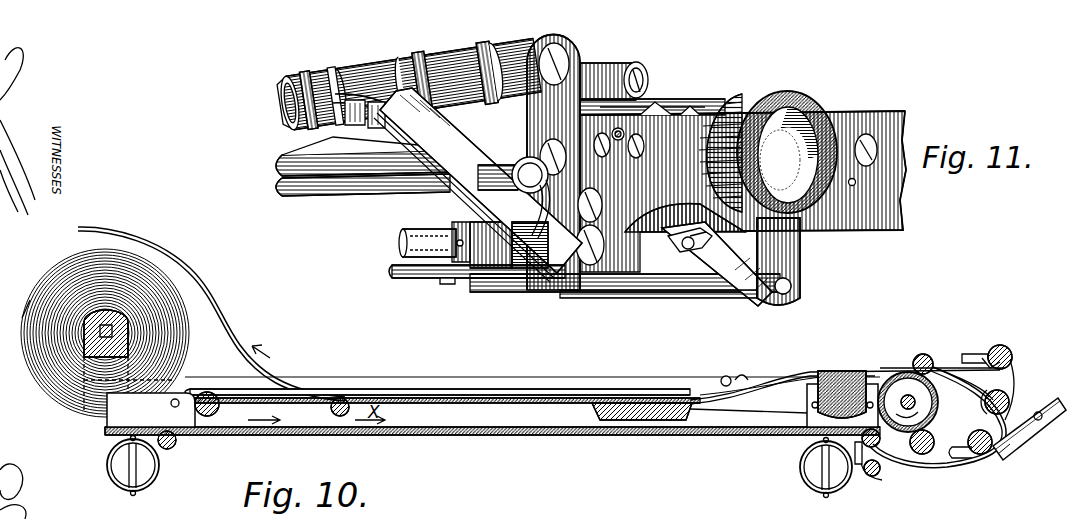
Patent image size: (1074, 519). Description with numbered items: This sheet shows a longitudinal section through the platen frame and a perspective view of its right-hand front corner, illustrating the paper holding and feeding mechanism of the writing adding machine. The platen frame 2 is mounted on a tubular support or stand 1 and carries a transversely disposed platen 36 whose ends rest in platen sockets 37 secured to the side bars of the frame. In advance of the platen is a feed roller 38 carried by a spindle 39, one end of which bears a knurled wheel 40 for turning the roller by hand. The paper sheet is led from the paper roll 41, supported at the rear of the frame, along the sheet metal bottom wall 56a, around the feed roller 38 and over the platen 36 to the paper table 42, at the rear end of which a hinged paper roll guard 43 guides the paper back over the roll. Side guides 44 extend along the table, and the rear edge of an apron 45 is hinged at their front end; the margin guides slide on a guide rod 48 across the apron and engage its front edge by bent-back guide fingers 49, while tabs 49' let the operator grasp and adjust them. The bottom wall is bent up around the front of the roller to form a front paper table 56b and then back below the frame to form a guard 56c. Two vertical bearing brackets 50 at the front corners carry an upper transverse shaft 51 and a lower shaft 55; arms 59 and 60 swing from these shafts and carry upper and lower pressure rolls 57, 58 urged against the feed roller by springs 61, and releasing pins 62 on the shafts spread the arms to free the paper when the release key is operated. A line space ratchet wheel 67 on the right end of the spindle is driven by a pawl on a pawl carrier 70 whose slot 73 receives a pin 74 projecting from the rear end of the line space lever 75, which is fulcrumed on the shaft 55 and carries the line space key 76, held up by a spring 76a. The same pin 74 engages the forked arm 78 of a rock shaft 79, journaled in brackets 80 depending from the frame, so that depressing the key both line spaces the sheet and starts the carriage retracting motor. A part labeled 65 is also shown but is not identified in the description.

In FIG. 10, the support or stand 1 is at (158, 468).
In FIG. 11, the platen frame 2 is at (862, 126).
In FIG. 10, the platen frame 2 is at (475, 437).
In FIG. 10, the platen 36 is at (840, 386).
In FIG. 10, the platen sockets or rests 37 is at (810, 424).
In FIG. 10, the feed roller 38 is at (938, 401).
In FIG. 10, the spindle 39 is at (932, 410).
In FIG. 11, the knurled wheel 40 is at (800, 95).
In FIG. 10, the paper roll 41 is at (62, 396).
In FIG. 10, the paper table 42 is at (540, 406).
In FIG. 10, the hinged paper roll guard 43 is at (340, 398).
In FIG. 10, the side guides 44 is at (552, 390).
In FIG. 10, the apron 45 is at (771, 380).
In FIG. 10, the guide rod 48 is at (724, 377).
In FIG. 10, the guide fingers 49 is at (765, 366).
In FIG. 10, the tabs 49' is at (748, 360).
In FIG. 11, the vertical bearing brackets 50 is at (566, 47).
In FIG. 10, the vertical bearing brackets 50 is at (1012, 372).
In FIG. 11, the transverse shaft 51 is at (505, 46).
In FIG. 10, the transverse shaft 51 is at (1012, 356).
In FIG. 11, the shaft 55 is at (402, 246).
In FIG. 10, the shaft 55 is at (1004, 456).
In FIG. 10, the bottom wall of the platen frame 56a is at (658, 423).
In FIG. 11, the front paper table 56b is at (300, 160).
In FIG. 10, the front paper table 56b is at (965, 376).
In FIG. 10, the guard 56c is at (958, 470).
In FIG. 11, the upper pressure roll 57 is at (633, 64).
In FIG. 10, the upper pressure roll 57 is at (920, 353).
In FIG. 11, the lower pressure roll 58 is at (602, 292).
In FIG. 10, the lower pressure roll 58 is at (919, 455).
In FIG. 11, the arm 59 is at (607, 64).
In FIG. 10, the arm 59 is at (938, 368).
In FIG. 11, the arm 60 is at (530, 272).
In FIG. 10, the arm 60 is at (942, 450).
In FIG. 11, the springs 61 is at (440, 55).
In FIG. 10, the springs 61 is at (988, 360).
In FIG. 10, the releasing pins 62 is at (976, 353).
In FIG. 11, the bar 65 is at (290, 198).
In FIG. 11, the line space ratchet wheel 67 is at (668, 102).
In FIG. 11, the pawl carrier 70 is at (685, 205).
In FIG. 11, the slot 73 is at (701, 251).
In FIG. 11, the pin 74 is at (680, 262).
In FIG. 11, the line space lever 75 is at (408, 182).
In FIG. 10, the line space lever 75 is at (1029, 429).
In FIG. 11, the line space key 76 is at (372, 86).
In FIG. 11, the spring 76a is at (500, 165).
In FIG. 10, the spring 76a is at (1012, 402).
In FIG. 11, the arm 78 is at (724, 300).
In FIG. 10, the arm 78 is at (900, 466).
In FIG. 11, the rock shaft 79 is at (405, 280).
In FIG. 10, the rock shaft 79 is at (872, 477).
In FIG. 11, the brackets 80 is at (800, 250).
In FIG. 10, the brackets 80 is at (856, 470).